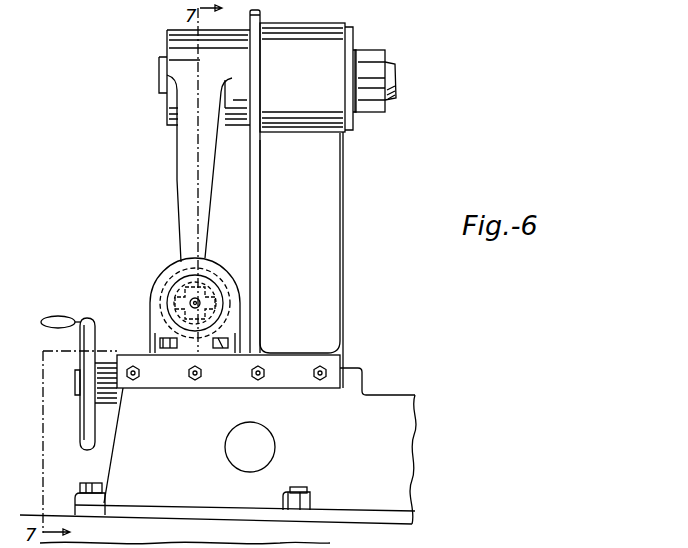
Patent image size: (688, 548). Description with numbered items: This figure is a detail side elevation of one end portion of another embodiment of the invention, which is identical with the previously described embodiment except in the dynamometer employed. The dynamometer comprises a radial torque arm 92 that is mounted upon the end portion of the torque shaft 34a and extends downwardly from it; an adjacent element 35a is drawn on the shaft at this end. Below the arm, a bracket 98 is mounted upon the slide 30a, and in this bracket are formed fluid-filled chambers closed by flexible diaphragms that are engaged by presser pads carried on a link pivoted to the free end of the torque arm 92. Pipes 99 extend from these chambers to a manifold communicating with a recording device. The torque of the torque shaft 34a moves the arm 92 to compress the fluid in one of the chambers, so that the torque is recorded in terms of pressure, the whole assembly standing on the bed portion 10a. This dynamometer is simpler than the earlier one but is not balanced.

The bed 10a is at (398, 428).
The slide 30a is at (327, 353).
The torque shaft 34a is at (395, 68).
The spindle collar 35a is at (380, 110).
The radial torque arm 92 is at (176, 190).
The bracket 98 is at (162, 276).
The pipes 99 is at (190, 302).